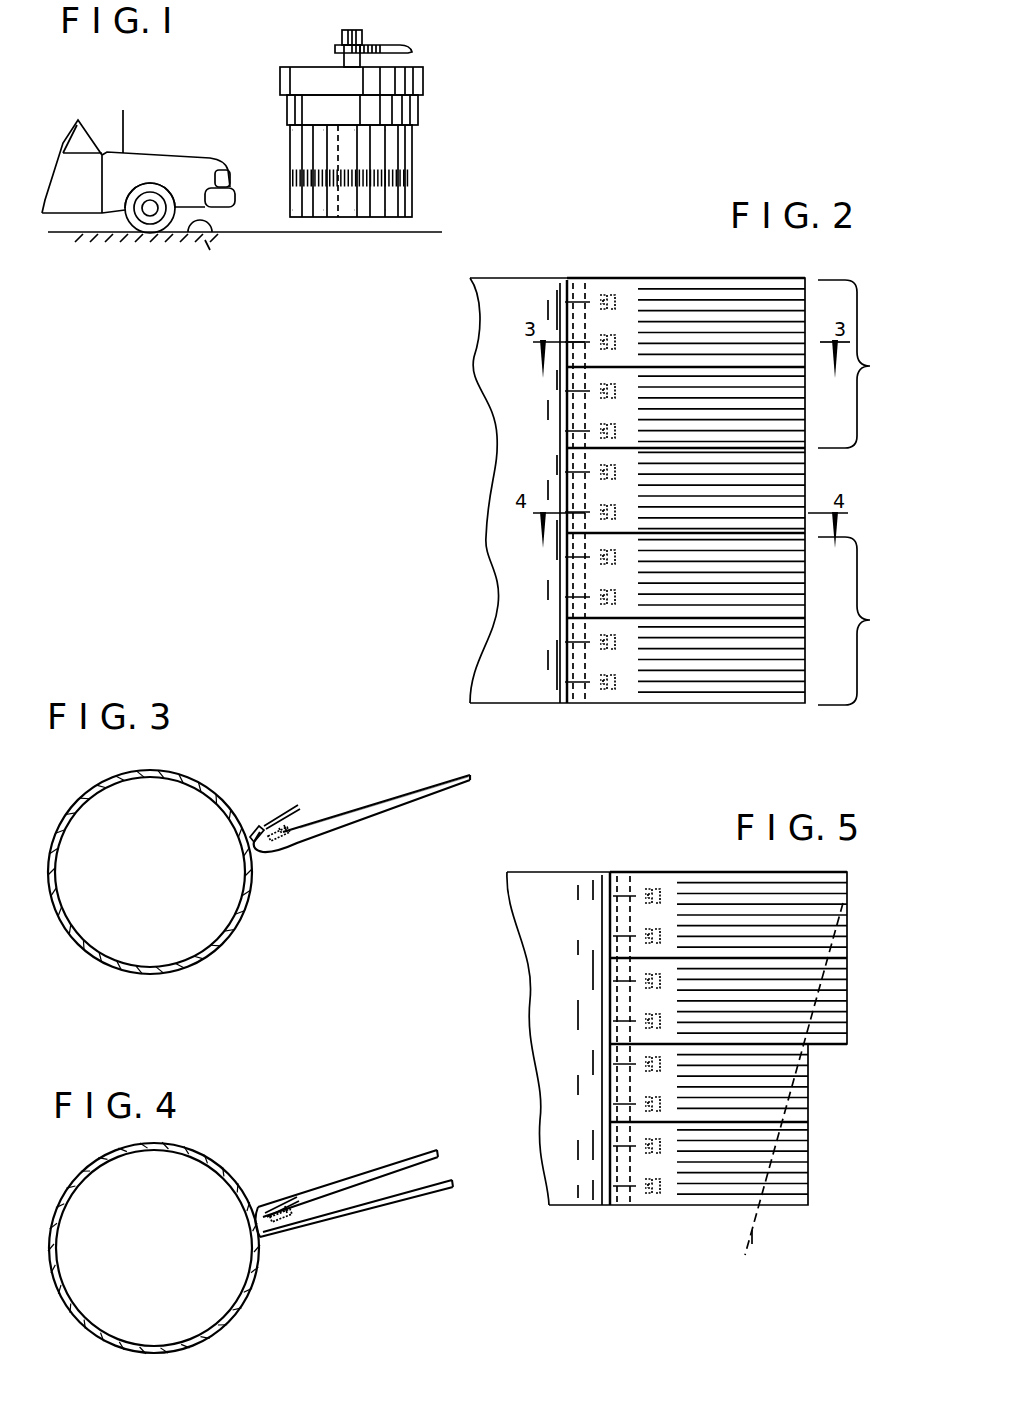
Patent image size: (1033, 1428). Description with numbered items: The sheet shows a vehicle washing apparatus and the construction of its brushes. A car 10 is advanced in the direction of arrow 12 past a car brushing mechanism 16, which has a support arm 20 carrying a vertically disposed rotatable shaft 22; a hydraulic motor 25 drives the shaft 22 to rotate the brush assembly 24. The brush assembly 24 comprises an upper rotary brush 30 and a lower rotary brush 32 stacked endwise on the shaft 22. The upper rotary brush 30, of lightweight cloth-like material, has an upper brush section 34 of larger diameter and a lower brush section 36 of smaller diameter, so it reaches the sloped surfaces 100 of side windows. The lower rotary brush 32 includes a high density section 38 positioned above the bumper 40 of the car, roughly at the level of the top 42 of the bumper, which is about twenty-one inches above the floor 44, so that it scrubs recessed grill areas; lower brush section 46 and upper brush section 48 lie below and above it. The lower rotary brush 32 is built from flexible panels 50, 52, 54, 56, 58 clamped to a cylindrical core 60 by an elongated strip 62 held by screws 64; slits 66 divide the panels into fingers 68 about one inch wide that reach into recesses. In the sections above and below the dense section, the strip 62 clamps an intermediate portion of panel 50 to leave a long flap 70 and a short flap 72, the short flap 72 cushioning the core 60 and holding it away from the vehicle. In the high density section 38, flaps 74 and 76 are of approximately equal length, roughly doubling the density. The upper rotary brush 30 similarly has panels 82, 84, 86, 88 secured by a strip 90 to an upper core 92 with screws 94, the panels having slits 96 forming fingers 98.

In FIG. 1, the car 10 is at (165, 155).
In FIG. 1, the arrow 12 is at (150, 88).
In FIG. 1, the car brushing mechanism 16 is at (352, 33).
In FIG. 1, the support arm 20 is at (388, 45).
In FIG. 1, the rotatable shaft 22 is at (342, 52).
In FIG. 1, the brush assembly 24 is at (364, 108).
In FIG. 1, the hydraulic motor 25 is at (360, 32).
In FIG. 1, the upper rotary brush 30 is at (260, 89).
In FIG. 5, the upper rotary brush 30 is at (724, 1038).
In FIG. 1, the lower rotary brush 32 is at (274, 207).
In FIG. 2, the lower rotary brush 32 is at (585, 725).
In FIG. 3, the lower rotary brush 32 is at (150, 874).
In FIG. 4, the lower rotary brush 32 is at (154, 1255).
In FIG. 1, the upper brush section 34 is at (290, 65).
In FIG. 5, the upper brush section 34 is at (860, 919).
In FIG. 1, the lower brush section 36 is at (278, 112).
In FIG. 5, the lower brush section 36 is at (822, 1117).
In FIG. 1, the high density section 38 is at (425, 172).
In FIG. 2, the high density section 38 is at (811, 525).
In FIG. 4, the high density section 38 is at (350, 1199).
In FIG. 1, the bumper 40 is at (238, 195).
In FIG. 1, the top of bumper 42 is at (233, 171).
In FIG. 1, the floor 44 is at (204, 240).
In FIG. 1, the lower brush section 46 is at (425, 200).
In FIG. 2, the lower brush section 46 is at (892, 614).
In FIG. 1, the upper brush section 48 is at (425, 143).
In FIG. 2, the upper brush section 48 is at (890, 366).
In FIG. 3, the upper brush section 48 is at (360, 829).
In FIG. 2, the flexible panel 50 is at (760, 287).
In FIG. 3, the flexible panel 50 is at (419, 800).
In FIG. 2, the flexible panel 52 is at (792, 406).
In FIG. 2, the flexible panel 54 is at (801, 478).
In FIG. 4, the flexible panel 54 is at (354, 1188).
In FIG. 2, the flexible panel 56 is at (798, 595).
In FIG. 2, the flexible panel 58 is at (800, 649).
In FIG. 2, the cylindrical core 60 is at (520, 292).
In FIG. 3, the cylindrical core 60 is at (199, 778).
In FIG. 4, the cylindrical core 60 is at (204, 1154).
In FIG. 2, the elongated strip 62 is at (590, 282).
In FIG. 3, the elongated strip 62 is at (274, 820).
In FIG. 4, the elongated strip 62 is at (264, 1208).
In FIG. 2, the screws 64 is at (613, 334).
In FIG. 3, the screws 64 is at (292, 835).
In FIG. 4, the screws 64 is at (284, 1203).
In FIG. 2, the slits 66 is at (732, 305).
In FIG. 2, the fingers 68 is at (666, 310).
In FIG. 3, the long flap 70 is at (396, 829).
In FIG. 3, the short flap 72 is at (263, 806).
In FIG. 4, the flap 74 is at (333, 1212).
In FIG. 4, the flap 76 is at (347, 1180).
In FIG. 5, the panel 82 is at (670, 914).
In FIG. 5, the panel 84 is at (676, 1006).
In FIG. 5, the panel 86 is at (676, 1091).
In FIG. 5, the panel 88 is at (676, 1172).
In FIG. 5, the strip 90 is at (633, 872).
In FIG. 5, the upper core 92 is at (547, 878).
In FIG. 5, the screws 94 is at (670, 865).
In FIG. 5, the slits 96 is at (753, 904).
In FIG. 5, the fingers 98 is at (803, 898).
In FIG. 5, the sloped surfaces 100 is at (768, 1240).